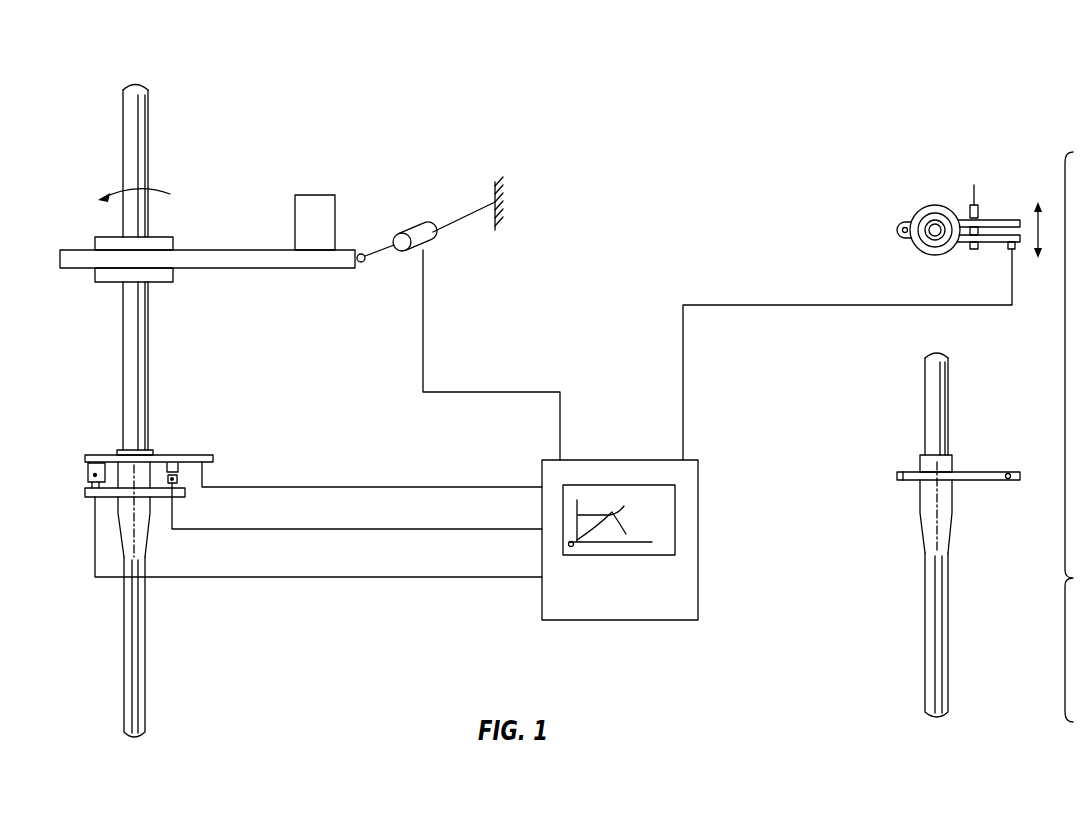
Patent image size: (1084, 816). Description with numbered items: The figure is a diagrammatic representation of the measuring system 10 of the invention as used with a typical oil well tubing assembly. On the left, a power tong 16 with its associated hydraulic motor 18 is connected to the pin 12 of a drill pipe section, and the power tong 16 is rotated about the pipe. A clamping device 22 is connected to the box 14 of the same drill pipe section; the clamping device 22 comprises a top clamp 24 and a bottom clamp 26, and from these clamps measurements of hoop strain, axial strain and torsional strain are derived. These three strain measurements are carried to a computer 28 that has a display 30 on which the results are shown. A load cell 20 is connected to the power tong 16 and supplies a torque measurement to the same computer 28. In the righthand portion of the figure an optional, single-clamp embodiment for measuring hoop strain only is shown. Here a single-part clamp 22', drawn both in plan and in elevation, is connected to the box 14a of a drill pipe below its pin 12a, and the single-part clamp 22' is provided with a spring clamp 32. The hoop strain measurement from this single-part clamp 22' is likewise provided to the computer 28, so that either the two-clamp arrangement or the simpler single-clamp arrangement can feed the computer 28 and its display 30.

The system 10 is at (982, 163).
The pin 12 is at (147, 342).
The pin 12a is at (950, 400).
The box 14 is at (145, 693).
The box 14a is at (943, 570).
The power tong 16 is at (240, 243).
The hydraulic motor 18 is at (330, 195).
The load cell 20 is at (422, 222).
The clamping device 22 is at (313, 481).
The single-part clamp 22' is at (967, 484).
The top clamp 24 is at (98, 453).
The bottom clamp 26 is at (92, 497).
The computer 28 is at (640, 460).
The display 30 is at (667, 522).
The spring clamp 32 is at (974, 185).